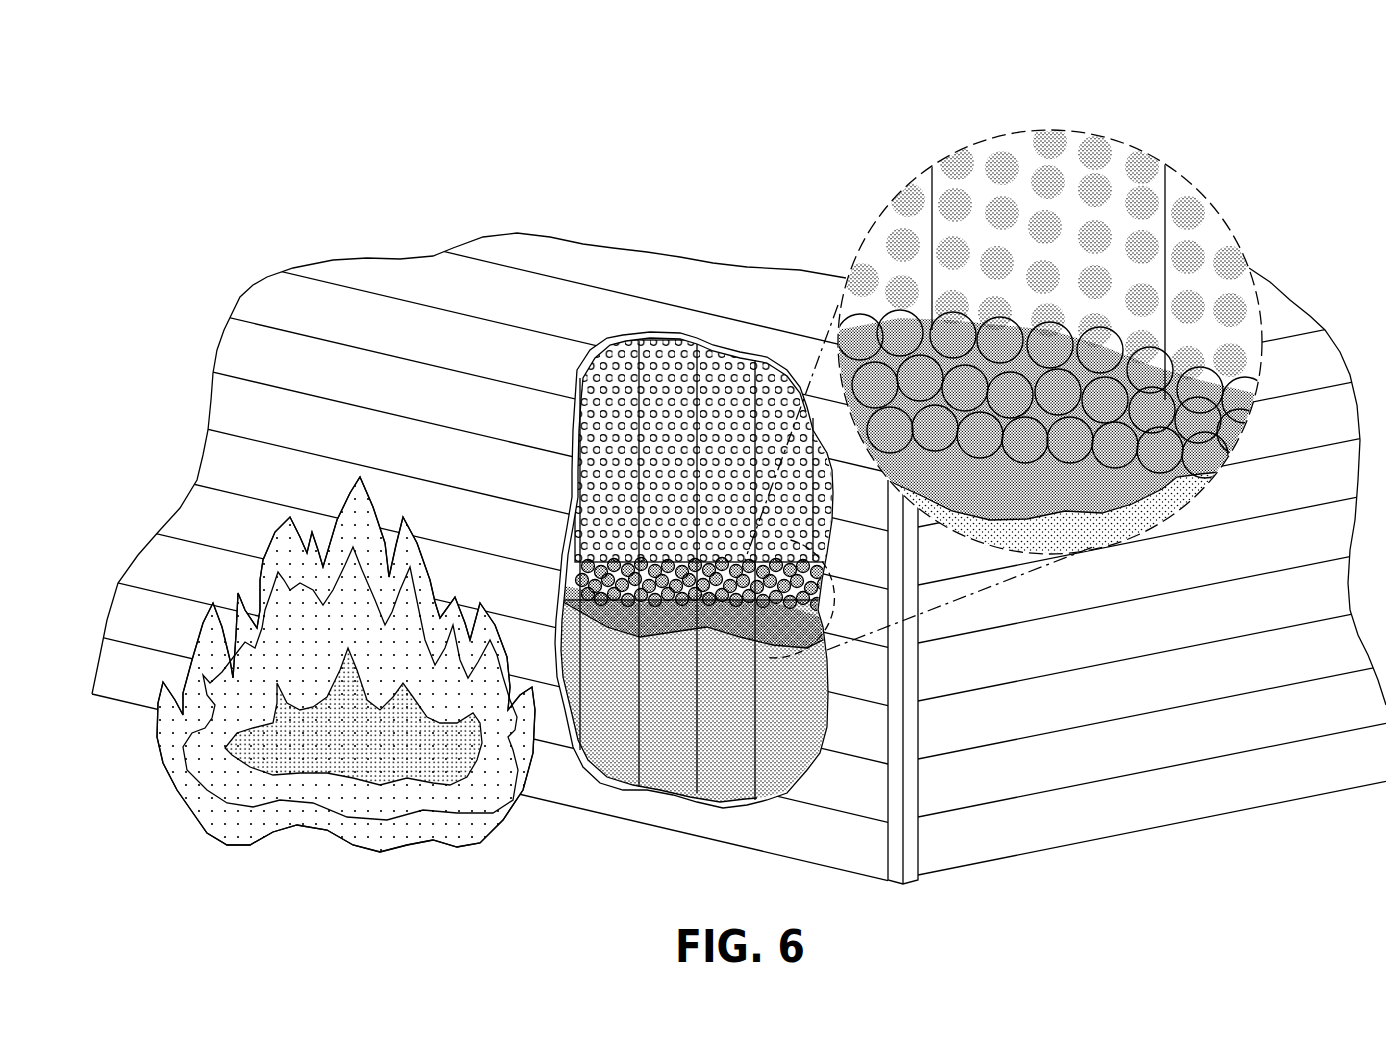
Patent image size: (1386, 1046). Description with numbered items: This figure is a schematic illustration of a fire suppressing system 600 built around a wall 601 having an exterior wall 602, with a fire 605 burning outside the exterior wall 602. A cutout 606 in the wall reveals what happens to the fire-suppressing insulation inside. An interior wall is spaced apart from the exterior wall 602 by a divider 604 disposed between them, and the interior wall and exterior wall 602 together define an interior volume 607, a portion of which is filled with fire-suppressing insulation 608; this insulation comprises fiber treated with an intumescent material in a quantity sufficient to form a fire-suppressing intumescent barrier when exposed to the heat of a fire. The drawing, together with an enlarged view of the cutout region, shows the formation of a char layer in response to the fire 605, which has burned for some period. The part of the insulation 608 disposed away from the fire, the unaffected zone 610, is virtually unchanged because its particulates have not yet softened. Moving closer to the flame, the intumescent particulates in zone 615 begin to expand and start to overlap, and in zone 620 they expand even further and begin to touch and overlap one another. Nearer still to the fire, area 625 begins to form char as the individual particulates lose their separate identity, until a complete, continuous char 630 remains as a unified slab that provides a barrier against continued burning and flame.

The fire suppressing system 600 is at (732, 462).
The wall 601 is at (732, 526).
The exterior wall 602 is at (182, 520).
The divider 604 is at (928, 520).
The fire 605 is at (250, 848).
The cutout 606 is at (608, 787).
The interior volume 607 is at (665, 757).
The fire-suppressing insulation 608 is at (727, 347).
The unaffected zone 610 is at (578, 432).
The zone of expanding particulates 615 is at (578, 540).
The zone of further expanded particulates 620 is at (575, 575).
The char-forming area 625 is at (572, 590).
The char barrier 630 is at (787, 757).